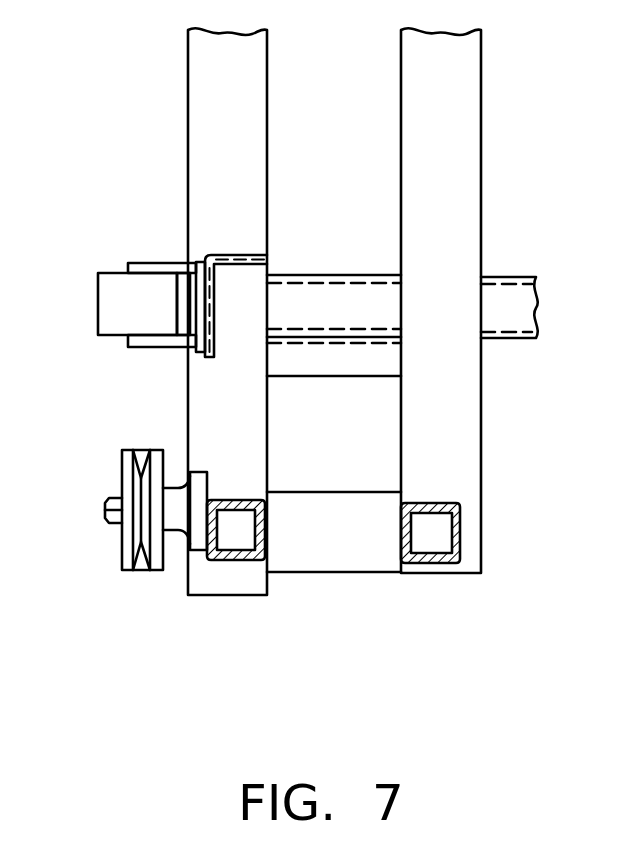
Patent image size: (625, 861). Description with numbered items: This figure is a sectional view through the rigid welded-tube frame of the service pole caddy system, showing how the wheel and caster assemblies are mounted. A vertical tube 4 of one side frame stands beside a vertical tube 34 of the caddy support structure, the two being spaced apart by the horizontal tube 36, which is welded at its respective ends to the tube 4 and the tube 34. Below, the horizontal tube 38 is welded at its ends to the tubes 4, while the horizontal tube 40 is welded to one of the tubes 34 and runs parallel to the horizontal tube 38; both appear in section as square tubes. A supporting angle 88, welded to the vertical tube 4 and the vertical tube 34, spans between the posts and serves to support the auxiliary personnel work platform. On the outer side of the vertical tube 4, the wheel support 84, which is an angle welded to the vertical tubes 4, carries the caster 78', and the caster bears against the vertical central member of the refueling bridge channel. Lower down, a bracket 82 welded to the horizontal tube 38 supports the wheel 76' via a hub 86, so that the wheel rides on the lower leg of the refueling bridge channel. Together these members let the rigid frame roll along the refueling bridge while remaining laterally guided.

The vertical tube 4 is at (203, 132).
The vertical tube 34 is at (473, 123).
The horizontal tube 36 is at (328, 505).
The horizontal tube 38 is at (243, 557).
The horizontal tube 40 is at (450, 563).
The wheel 76' is at (108, 480).
The caster 78' is at (107, 290).
The bracket 82 is at (191, 472).
The wheel support 84 is at (232, 255).
The hub 86 is at (169, 532).
The supporting angle 88 is at (342, 365).